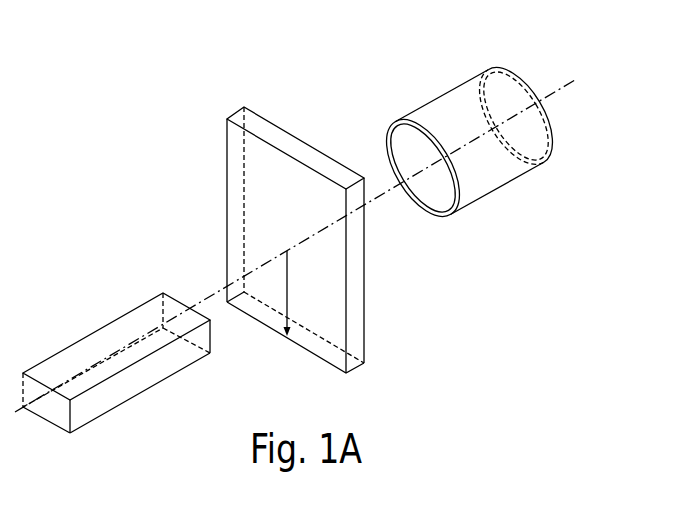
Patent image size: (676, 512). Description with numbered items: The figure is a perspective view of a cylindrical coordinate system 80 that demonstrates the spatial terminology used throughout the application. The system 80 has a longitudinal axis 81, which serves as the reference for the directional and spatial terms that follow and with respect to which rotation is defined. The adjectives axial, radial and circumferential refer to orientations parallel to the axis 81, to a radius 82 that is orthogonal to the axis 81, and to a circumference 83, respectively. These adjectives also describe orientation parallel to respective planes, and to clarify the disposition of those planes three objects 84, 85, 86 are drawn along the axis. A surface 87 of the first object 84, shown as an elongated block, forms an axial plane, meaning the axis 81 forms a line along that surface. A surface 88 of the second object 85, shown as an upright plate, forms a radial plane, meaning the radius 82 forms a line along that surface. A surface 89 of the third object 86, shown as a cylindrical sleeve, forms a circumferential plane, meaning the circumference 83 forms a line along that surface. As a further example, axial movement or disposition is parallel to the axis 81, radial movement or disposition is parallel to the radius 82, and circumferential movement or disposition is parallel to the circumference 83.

The cylindrical coordinate system 80 is at (200, 151).
The longitudinal axis 81 is at (562, 88).
The radius 82 is at (287, 298).
The circumference 83 is at (388, 150).
The object 84 is at (107, 414).
The object 85 is at (376, 373).
The object 86 is at (502, 192).
The surface 87 is at (88, 346).
The surface 88 is at (233, 229).
The surface 89 is at (448, 92).